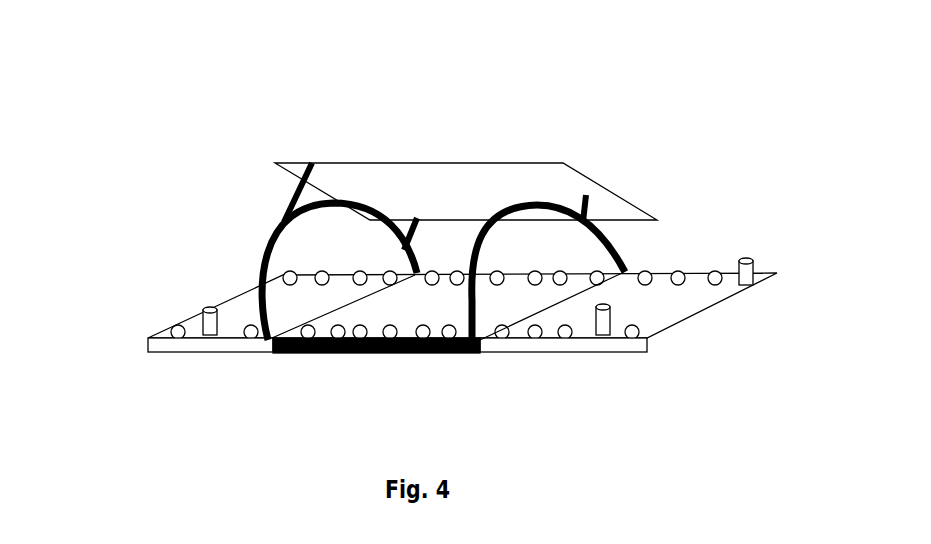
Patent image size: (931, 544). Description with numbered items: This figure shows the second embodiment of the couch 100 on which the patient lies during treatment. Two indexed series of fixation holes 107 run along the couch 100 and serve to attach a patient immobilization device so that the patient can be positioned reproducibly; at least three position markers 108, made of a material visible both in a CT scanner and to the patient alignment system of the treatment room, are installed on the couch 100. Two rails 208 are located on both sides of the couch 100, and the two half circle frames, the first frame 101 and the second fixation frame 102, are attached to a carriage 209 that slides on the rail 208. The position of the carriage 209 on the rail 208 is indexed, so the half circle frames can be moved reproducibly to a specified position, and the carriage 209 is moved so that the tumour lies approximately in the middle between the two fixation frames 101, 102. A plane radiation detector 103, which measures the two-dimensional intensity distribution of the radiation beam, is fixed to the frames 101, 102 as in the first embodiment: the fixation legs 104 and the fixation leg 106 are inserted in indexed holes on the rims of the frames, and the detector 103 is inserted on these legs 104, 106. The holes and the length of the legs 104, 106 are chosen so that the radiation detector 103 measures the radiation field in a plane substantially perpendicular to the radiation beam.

The couch 100 is at (250, 304).
The first frame 101 is at (258, 253).
The second fixation frame 102 is at (493, 352).
The plane radiation detector 103 is at (403, 162).
The fixation legs 104 is at (287, 202).
The fixation leg 106 is at (590, 190).
The fixation holes 107 is at (680, 272).
The position markers 108 is at (205, 335).
The rails 208 is at (240, 345).
The carriage 209 is at (355, 355).